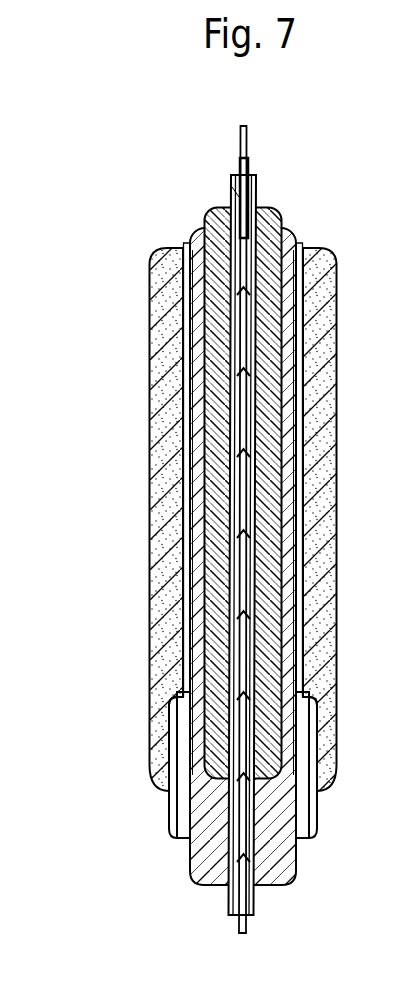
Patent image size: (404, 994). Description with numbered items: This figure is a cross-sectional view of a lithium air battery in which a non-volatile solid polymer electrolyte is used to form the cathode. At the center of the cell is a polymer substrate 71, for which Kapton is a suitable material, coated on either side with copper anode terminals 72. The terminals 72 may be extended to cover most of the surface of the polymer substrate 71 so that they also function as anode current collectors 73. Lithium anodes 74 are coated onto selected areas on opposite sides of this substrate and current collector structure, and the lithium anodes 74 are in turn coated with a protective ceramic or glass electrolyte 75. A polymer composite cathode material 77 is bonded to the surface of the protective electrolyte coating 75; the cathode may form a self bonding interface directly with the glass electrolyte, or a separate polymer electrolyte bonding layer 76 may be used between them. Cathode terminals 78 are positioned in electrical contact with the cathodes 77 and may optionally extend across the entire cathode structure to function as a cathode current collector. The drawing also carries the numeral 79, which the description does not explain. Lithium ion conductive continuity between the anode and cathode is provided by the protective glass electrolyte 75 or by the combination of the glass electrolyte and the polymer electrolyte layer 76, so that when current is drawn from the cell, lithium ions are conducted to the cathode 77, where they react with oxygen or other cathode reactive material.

The polymer substrate 71 is at (236, 200).
The copper anode terminals 72 is at (257, 181).
The anode current collectors 73 is at (237, 273).
The lithium anodes 74 is at (215, 320).
The protective ceramic or glass electrolyte 75 is at (197, 462).
The polymer electrolyte bonding layer 76 is at (187, 583).
The polymer composite cathode material 77 is at (152, 653).
The cathode terminals 78 is at (167, 748).
The flange 79 is at (177, 820).